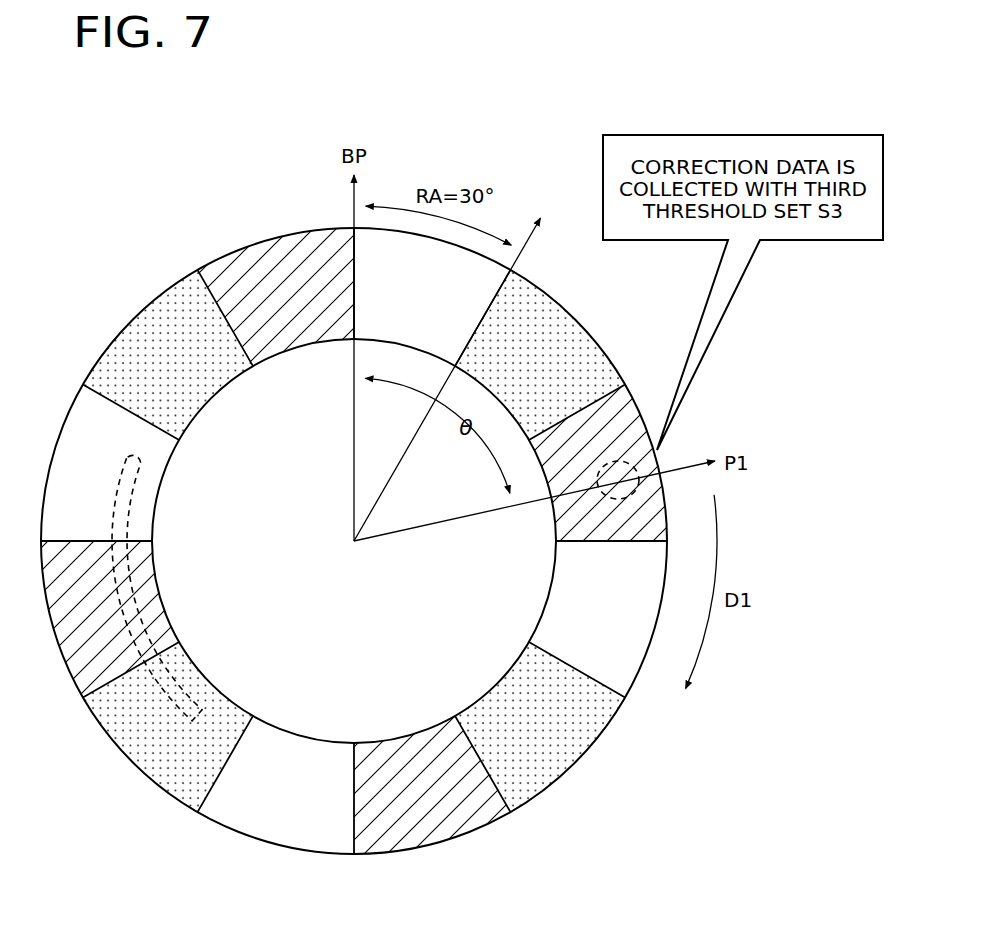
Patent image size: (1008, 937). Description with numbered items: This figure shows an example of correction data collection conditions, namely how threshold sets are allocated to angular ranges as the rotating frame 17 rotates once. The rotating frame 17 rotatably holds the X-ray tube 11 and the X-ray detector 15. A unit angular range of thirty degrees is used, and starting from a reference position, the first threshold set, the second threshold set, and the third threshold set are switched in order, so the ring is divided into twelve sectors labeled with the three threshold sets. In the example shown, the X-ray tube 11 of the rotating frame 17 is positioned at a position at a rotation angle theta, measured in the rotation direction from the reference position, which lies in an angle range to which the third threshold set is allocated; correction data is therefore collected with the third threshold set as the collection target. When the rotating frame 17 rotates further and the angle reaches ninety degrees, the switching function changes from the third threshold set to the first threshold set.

The rotating frame 17 is at (125, 220).
The X-ray detector 15 is at (135, 512).
The X-ray tube 11 is at (610, 499).